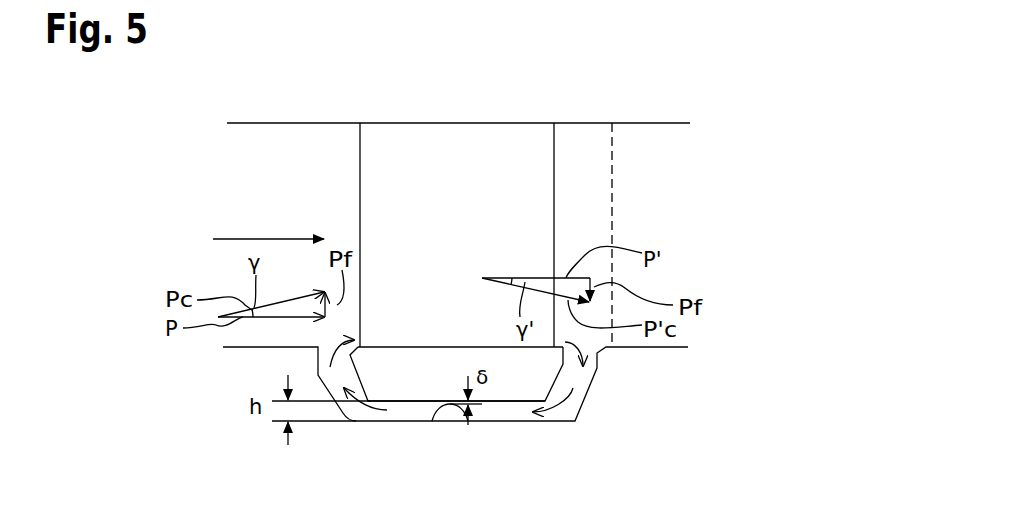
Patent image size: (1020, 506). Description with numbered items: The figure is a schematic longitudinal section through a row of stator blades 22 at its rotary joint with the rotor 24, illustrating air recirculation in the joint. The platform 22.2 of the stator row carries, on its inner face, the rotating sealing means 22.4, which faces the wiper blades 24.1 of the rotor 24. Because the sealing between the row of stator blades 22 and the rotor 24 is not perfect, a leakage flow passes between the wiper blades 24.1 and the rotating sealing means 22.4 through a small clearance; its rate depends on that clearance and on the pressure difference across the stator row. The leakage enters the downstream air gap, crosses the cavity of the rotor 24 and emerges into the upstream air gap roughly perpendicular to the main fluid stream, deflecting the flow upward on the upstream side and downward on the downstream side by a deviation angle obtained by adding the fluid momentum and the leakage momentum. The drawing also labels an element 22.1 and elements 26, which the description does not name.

The row of stator blades 22 is at (479, 120).
The upper portion of the vane 22.1 is at (471, 189).
The platform 22.2 is at (435, 362).
The rotating sealing means 22.4 is at (420, 401).
The rotor 24 is at (582, 408).
The wiper blades 24.1 is at (450, 404).
The flow passage walls / channel 26 is at (279, 112).